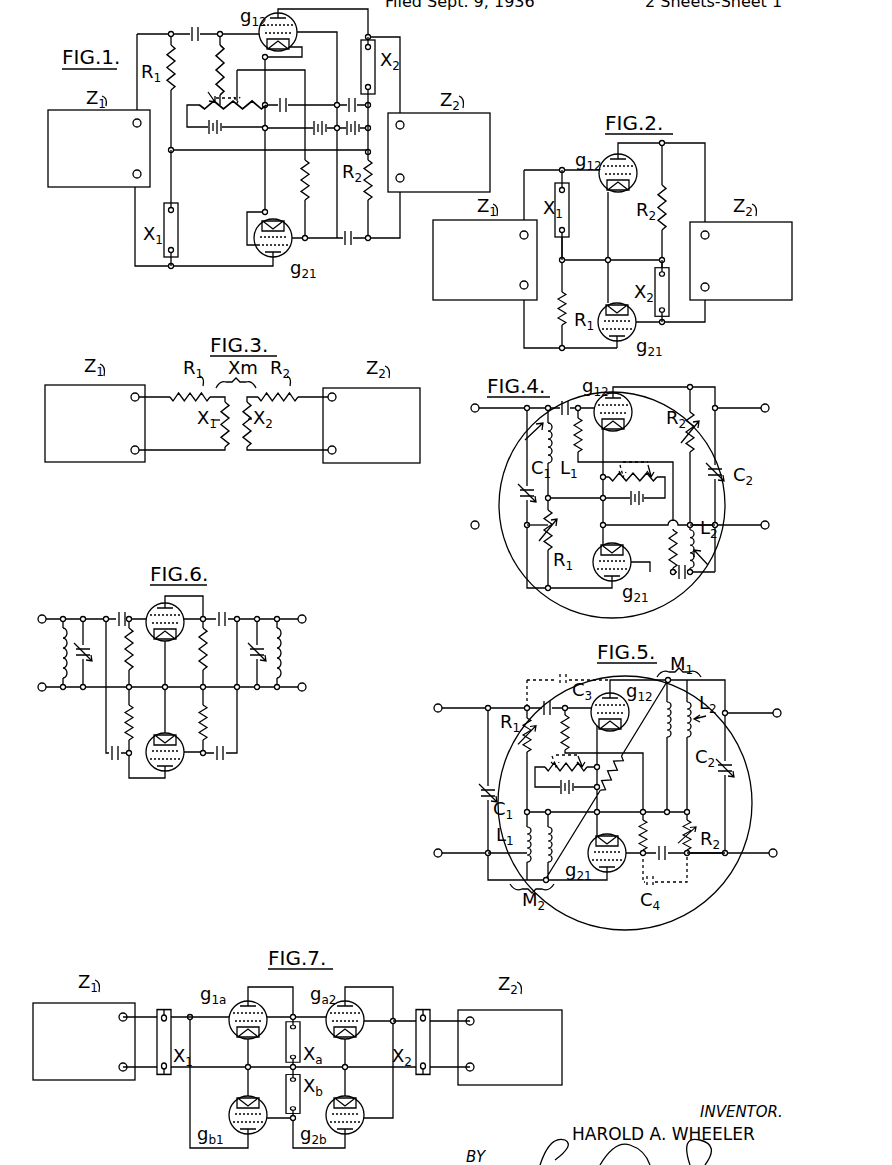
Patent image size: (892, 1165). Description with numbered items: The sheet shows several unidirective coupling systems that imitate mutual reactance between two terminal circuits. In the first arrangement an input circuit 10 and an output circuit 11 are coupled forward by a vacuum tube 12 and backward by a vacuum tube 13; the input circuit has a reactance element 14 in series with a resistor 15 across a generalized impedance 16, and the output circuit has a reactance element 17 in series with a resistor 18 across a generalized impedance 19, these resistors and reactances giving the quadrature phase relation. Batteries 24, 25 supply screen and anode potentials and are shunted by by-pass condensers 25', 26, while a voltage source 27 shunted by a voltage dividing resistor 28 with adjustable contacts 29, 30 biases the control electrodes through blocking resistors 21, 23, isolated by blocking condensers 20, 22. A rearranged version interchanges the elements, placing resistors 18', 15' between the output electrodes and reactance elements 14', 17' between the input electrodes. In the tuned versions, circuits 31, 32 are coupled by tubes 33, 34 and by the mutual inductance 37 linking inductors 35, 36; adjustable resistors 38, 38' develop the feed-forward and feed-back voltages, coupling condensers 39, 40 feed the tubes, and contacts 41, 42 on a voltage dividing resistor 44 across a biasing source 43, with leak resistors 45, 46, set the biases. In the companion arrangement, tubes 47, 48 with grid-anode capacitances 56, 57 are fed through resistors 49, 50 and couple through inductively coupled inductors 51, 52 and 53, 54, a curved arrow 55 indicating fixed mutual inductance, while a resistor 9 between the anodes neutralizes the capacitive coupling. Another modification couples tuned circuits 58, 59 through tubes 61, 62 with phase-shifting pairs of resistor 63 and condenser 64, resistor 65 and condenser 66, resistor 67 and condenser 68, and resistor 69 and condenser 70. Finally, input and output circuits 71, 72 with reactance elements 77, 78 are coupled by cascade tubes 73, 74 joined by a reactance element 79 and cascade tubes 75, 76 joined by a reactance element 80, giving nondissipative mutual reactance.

In FIG. 5, the resistor 9 is at (613, 773).
In FIG. 1, the input circuit 10 is at (163, 209).
In FIG. 2, the input circuit 10 is at (547, 323).
In FIG. 3, the input circuit 10 is at (190, 433).
In FIG. 1, the output circuit 11 is at (389, 215).
In FIG. 2, the output circuit 11 is at (690, 317).
In FIG. 3, the output circuit 11 is at (292, 433).
In FIG. 1, the vacuum tube 12 is at (296, 20).
In FIG. 2, the vacuum tube 12 is at (632, 169).
In FIG. 1, the vacuum tube 13 is at (256, 255).
In FIG. 2, the vacuum tube 13 is at (603, 336).
In FIG. 1, the reactance element 14 is at (185, 230).
In FIG. 2, the reactance element 14' is at (579, 207).
In FIG. 1, the resistor 15 is at (183, 67).
In FIG. 2, the resistor 15' is at (578, 303).
In FIG. 1, the generalized impedance 16 is at (108, 189).
In FIG. 2, the generalized impedance 16 is at (498, 300).
In FIG. 3, the generalized impedance 16 is at (107, 462).
In FIG. 7, the generalized impedance 16 is at (98, 1080).
In FIG. 1, the reactance element 17 is at (359, 67).
In FIG. 2, the reactance element 17' is at (675, 292).
In FIG. 1, the resistor 18 is at (356, 182).
In FIG. 2, the resistor 18' is at (679, 204).
In FIG. 1, the generalized impedance 19 is at (459, 193).
In FIG. 2, the generalized impedance 19 is at (758, 302).
In FIG. 3, the generalized impedance 19 is at (385, 464).
In FIG. 7, the generalized impedance 19 is at (523, 1086).
In FIG. 1, the direct current blocking condenser 20 is at (197, 24).
In FIG. 1, the high-frequency blocking resistor 21 is at (210, 70).
In FIG. 1, the direct current blocking condenser 22 is at (352, 242).
In FIG. 1, the high-frequency blocking resistor 23 is at (306, 188).
In FIG. 1, the battery 24 is at (330, 131).
In FIG. 1, the battery 25 is at (354, 137).
In FIG. 1, the high-frequency by-pass condenser 25' is at (289, 92).
In FIG. 1, the high-frequency by-pass condenser 26 is at (355, 102).
In FIG. 1, the voltage source 27 is at (231, 123).
In FIG. 1, the voltage dividing resistor 28 is at (213, 118).
In FIG. 1, the adjustable contact 29 is at (204, 87).
In FIG. 1, the adjustable contact 30 is at (237, 88).
In FIG. 4, the tuned input circuit 31 is at (546, 561).
In FIG. 5, the tuned input circuit 31 is at (512, 781).
In FIG. 4, the tuned output circuit 32 is at (716, 507).
In FIG. 5, the tuned output circuit 32 is at (716, 798).
In FIG. 4, the vacuum tube 33 is at (632, 407).
In FIG. 4, the vacuum tube 34 is at (597, 554).
In FIG. 4, the inductor 35 is at (550, 446).
In FIG. 4, the inductor 36 is at (716, 549).
In FIG. 4, the curved arrow 37 is at (559, 607).
In FIG. 4, the adjustable resistor 38 is at (700, 434).
In FIG. 4, the adjustable resistor 38' is at (567, 530).
In FIG. 4, the low reactance coupling condenser 39 is at (564, 396).
In FIG. 4, the low reactance coupling condenser 40 is at (681, 576).
In FIG. 4, the contact 41 is at (629, 456).
In FIG. 5, the contact 41 is at (558, 749).
In FIG. 4, the contact 42 is at (659, 456).
In FIG. 5, the contact 42 is at (591, 749).
In FIG. 4, the source of biasing potential 43 is at (636, 503).
In FIG. 5, the source of biasing potential 43 is at (562, 791).
In FIG. 4, the voltage dividing resistor 44 is at (603, 487).
In FIG. 5, the voltage dividing resistor 44 is at (553, 762).
In FIG. 4, the leak resistor 45 is at (592, 437).
In FIG. 4, the leak resistor 46 is at (663, 549).
In FIG. 5, the vacuum tube 47 is at (579, 732).
In FIG. 5, the vacuum tube 48 is at (635, 834).
In FIG. 5, the resistor 49 is at (522, 736).
In FIG. 5, the resistor 50 is at (678, 834).
In FIG. 5, the inductor 51 is at (658, 719).
In FIG. 5, the inductor 52 is at (703, 723).
In FIG. 5, the inductor 53 is at (523, 862).
In FIG. 5, the inductor 54 is at (550, 842).
In FIG. 5, the curved arrow 55 is at (722, 878).
In FIG. 5, the grid-anode capacitance 56 is at (547, 698).
In FIG. 5, the grid-anode capacitance 57 is at (663, 856).
In FIG. 6, the tuned input circuit 58 is at (90, 612).
In FIG. 6, the tuned output circuit 59 is at (255, 612).
In FIG. 6, the vacuum tube 61 is at (184, 640).
In FIG. 6, the vacuum tube 62 is at (178, 766).
In FIG. 6, the resistor 63 is at (142, 649).
In FIG. 6, the condenser 64 is at (131, 612).
In FIG. 6, the resistor 65 is at (216, 649).
In FIG. 6, the condenser 66 is at (235, 612).
In FIG. 6, the resistor 67 is at (216, 719).
In FIG. 6, the condenser 68 is at (228, 760).
In FIG. 6, the resistor 69 is at (142, 719).
In FIG. 6, the condenser 70 is at (110, 760).
In FIG. 7, the input circuit 71 is at (159, 1048).
In FIG. 7, the output circuit 72 is at (450, 1053).
In FIG. 7, the vacuum tube 73 is at (265, 1018).
In FIG. 7, the vacuum tube 74 is at (363, 1018).
In FIG. 7, the vacuum tube 75 is at (363, 1128).
In FIG. 7, the vacuum tube 76 is at (256, 1128).
In FIG. 7, the reactance element 77 is at (174, 1045).
In FIG. 7, the reactance element 78 is at (414, 1049).
In FIG. 7, the reactance element 79 is at (301, 1044).
In FIG. 7, the reactance element 80 is at (287, 1103).